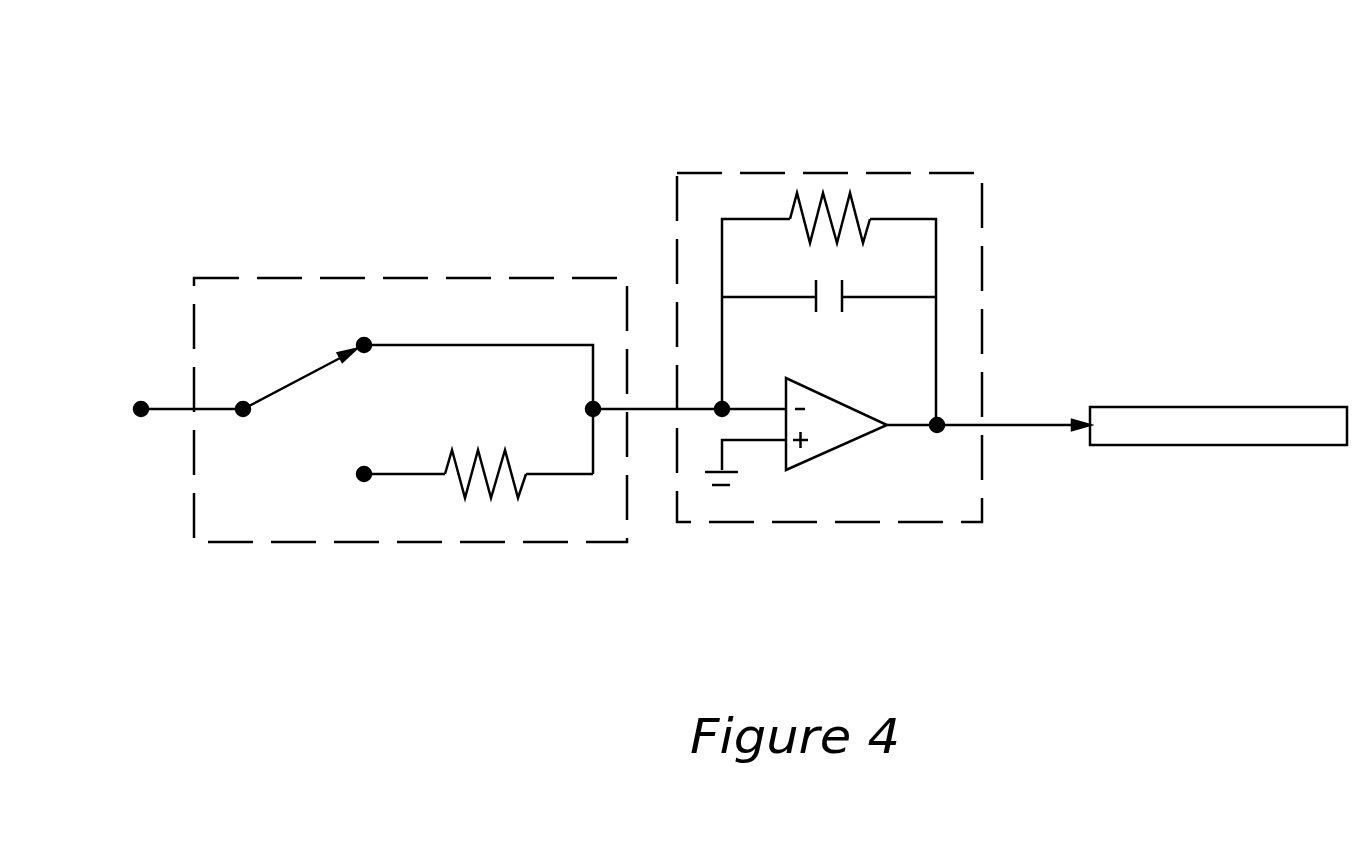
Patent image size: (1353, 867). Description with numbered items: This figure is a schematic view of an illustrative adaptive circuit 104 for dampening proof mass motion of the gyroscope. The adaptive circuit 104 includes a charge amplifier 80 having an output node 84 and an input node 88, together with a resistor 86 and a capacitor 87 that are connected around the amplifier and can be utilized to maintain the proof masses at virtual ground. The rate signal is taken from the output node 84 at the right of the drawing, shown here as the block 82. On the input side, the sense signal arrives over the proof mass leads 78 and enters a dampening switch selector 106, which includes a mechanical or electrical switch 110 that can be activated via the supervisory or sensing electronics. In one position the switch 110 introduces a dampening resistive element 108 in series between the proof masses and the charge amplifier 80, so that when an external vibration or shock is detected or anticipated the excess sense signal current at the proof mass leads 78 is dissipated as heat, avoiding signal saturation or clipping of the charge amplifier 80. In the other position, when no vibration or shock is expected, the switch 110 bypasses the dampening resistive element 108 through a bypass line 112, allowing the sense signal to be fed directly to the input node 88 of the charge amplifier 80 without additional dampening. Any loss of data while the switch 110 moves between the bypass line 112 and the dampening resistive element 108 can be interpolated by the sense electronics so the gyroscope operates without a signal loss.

The proof mass leads 78 is at (141, 409).
The switch 110 is at (275, 340).
The dampening switch selector 106 is at (345, 278).
The bypass line 112 is at (493, 345).
The dampening resistive element 108 is at (490, 490).
The adaptive circuit 104 is at (806, 115).
The charge amplifier 80 is at (983, 255).
The resistor 86 is at (852, 203).
The capacitor 87 is at (815, 288).
The input node 88 is at (722, 409).
The output node 84 is at (937, 425).
The rate signal output 82 is at (1208, 407).